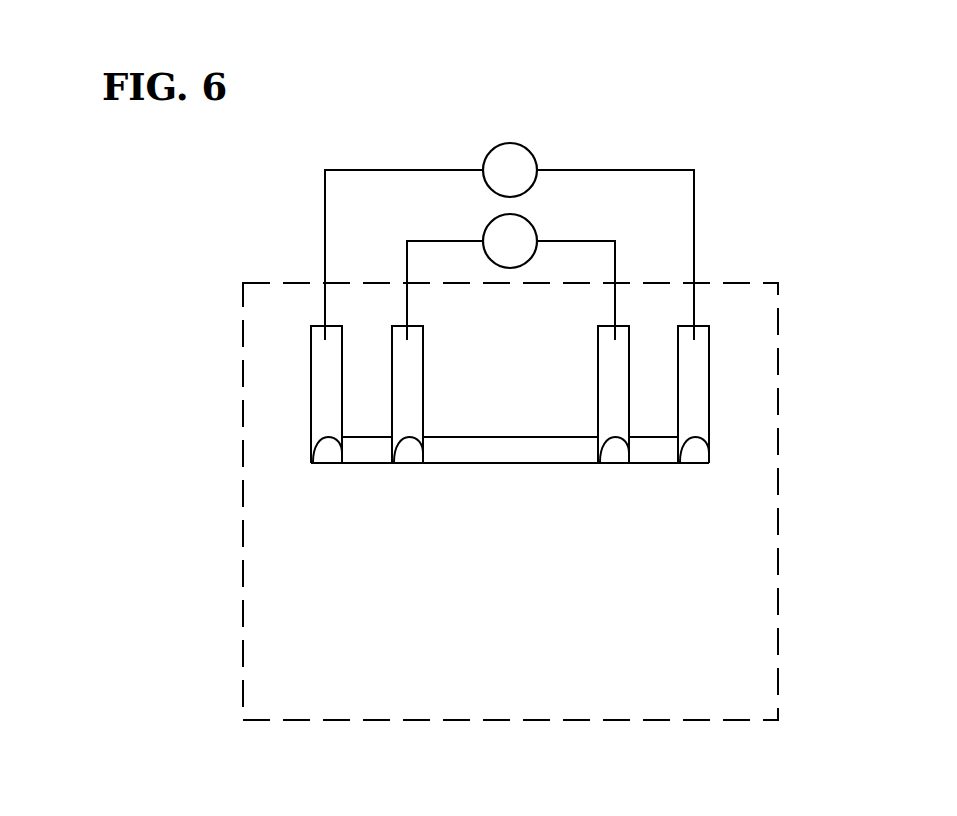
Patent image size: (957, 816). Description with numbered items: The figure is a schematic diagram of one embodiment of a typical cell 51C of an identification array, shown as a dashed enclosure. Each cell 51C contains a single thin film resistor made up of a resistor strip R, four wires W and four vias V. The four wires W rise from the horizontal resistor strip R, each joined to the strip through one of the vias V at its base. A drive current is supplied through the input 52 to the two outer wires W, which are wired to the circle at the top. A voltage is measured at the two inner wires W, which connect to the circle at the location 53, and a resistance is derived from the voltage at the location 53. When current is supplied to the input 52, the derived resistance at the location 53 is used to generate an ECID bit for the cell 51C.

The cell 51C is at (575, 473).
The input 52 is at (559, 145).
The location 53 is at (550, 227).
The wires W is at (510, 391).
The vias V is at (511, 413).
The resistor strip R is at (510, 425).